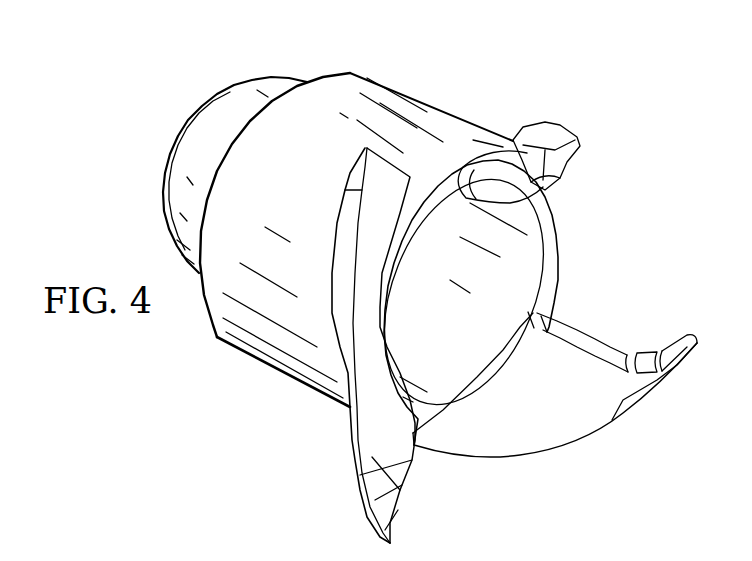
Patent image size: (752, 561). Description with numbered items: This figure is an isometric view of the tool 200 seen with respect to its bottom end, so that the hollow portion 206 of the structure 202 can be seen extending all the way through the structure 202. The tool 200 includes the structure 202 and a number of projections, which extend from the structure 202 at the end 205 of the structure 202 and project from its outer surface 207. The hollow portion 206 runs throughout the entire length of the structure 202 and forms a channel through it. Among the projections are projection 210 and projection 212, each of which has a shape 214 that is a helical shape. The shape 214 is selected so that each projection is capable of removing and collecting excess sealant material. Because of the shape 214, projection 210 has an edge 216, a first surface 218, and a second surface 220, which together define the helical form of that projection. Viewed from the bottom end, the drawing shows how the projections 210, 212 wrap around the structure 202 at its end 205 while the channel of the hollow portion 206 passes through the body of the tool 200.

The tool 200 is at (132, 92).
The structure 202 is at (427, 115).
The end 205 is at (563, 242).
The hollow portion 206 is at (512, 265).
The outer surface 207 is at (350, 71).
The projection 210 is at (537, 137).
The projection 212 is at (363, 463).
The shape 214 is at (503, 436).
The edge 216 is at (680, 338).
The first surface 218 is at (593, 340).
The second surface 220 is at (460, 458).